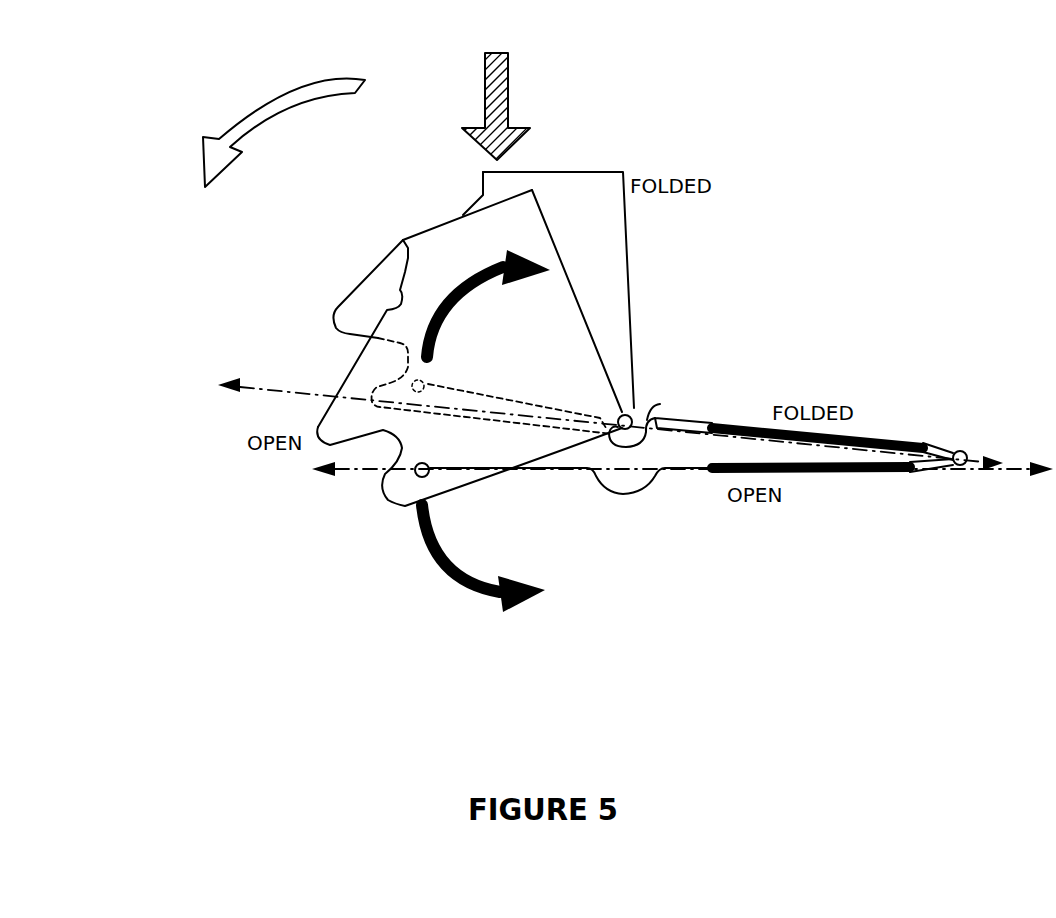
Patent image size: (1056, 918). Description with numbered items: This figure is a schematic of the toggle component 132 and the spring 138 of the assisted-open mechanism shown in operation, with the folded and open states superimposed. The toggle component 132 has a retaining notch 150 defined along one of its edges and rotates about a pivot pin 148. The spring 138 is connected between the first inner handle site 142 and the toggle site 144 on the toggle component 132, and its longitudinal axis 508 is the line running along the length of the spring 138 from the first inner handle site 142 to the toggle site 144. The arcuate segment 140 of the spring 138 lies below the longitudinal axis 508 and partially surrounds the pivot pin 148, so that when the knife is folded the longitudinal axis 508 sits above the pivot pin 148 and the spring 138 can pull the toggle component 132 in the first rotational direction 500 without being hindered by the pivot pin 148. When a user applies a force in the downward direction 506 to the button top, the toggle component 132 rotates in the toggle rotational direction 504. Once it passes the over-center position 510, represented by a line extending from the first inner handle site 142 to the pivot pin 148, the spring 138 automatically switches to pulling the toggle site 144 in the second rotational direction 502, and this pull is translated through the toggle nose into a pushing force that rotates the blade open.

The toggle component 132 is at (558, 172).
The spring 138 is at (636, 412).
The arcuate segment 140 is at (656, 417).
The first inner handle site 142 is at (960, 450).
The toggle site 144 is at (416, 381).
The pivot pin 148 is at (633, 418).
The retaining notch 150 is at (390, 455).
The first rotational direction 500 is at (444, 293).
The second rotational direction 502 is at (455, 582).
The toggle rotational direction 504 is at (276, 98).
The downward direction 506 is at (500, 67).
The longitudinal axis 508 is at (993, 472).
The over-center position 510 is at (250, 388).